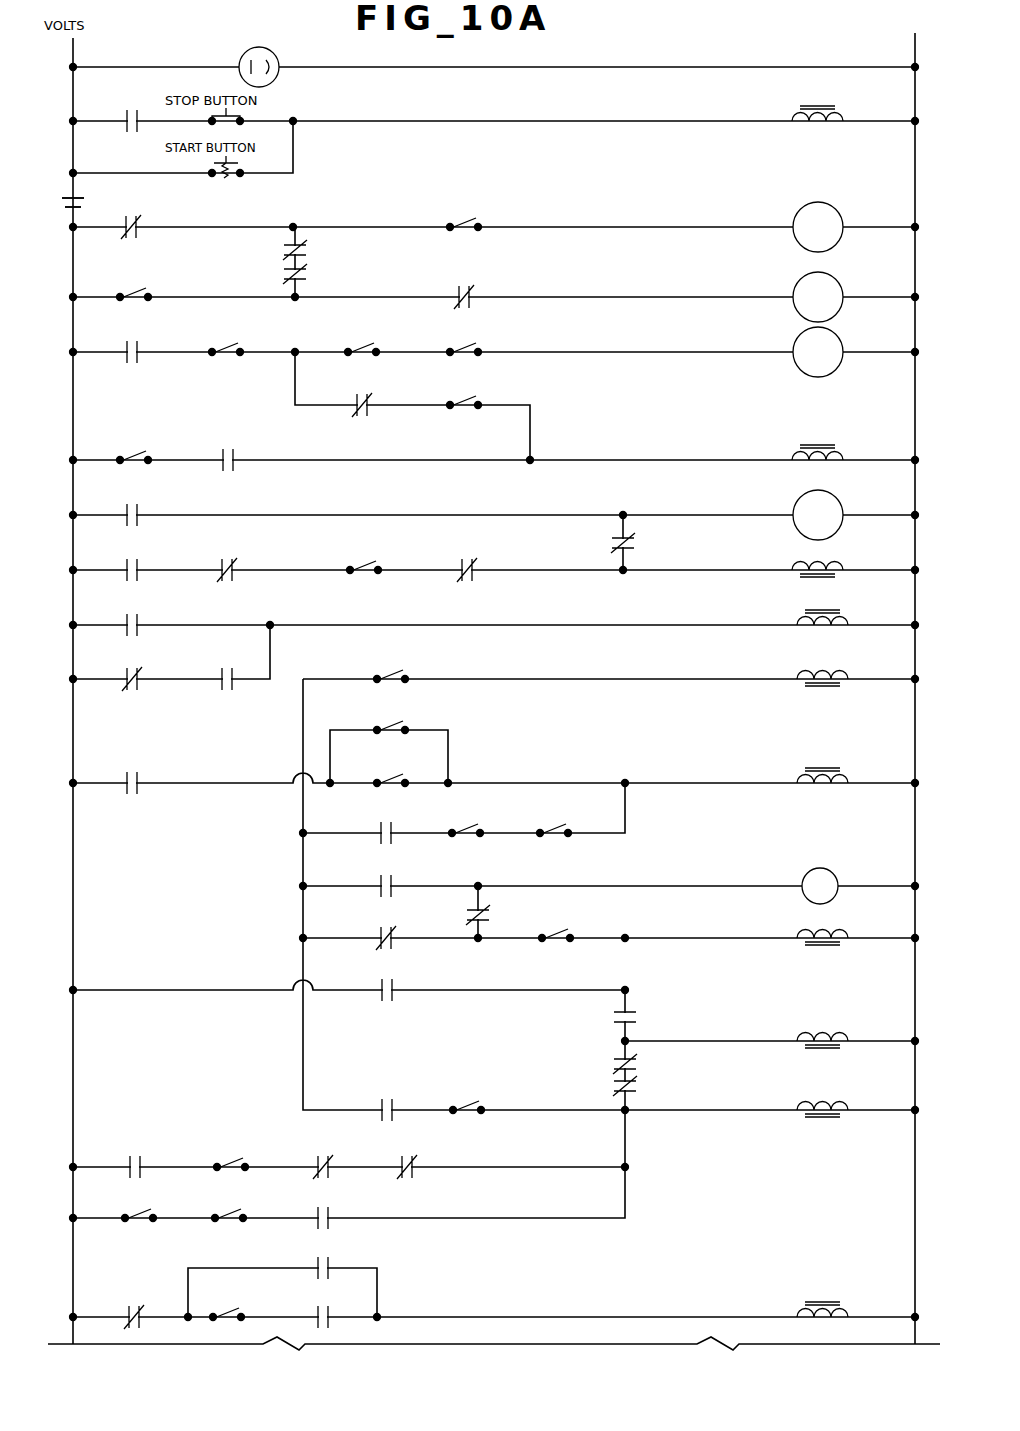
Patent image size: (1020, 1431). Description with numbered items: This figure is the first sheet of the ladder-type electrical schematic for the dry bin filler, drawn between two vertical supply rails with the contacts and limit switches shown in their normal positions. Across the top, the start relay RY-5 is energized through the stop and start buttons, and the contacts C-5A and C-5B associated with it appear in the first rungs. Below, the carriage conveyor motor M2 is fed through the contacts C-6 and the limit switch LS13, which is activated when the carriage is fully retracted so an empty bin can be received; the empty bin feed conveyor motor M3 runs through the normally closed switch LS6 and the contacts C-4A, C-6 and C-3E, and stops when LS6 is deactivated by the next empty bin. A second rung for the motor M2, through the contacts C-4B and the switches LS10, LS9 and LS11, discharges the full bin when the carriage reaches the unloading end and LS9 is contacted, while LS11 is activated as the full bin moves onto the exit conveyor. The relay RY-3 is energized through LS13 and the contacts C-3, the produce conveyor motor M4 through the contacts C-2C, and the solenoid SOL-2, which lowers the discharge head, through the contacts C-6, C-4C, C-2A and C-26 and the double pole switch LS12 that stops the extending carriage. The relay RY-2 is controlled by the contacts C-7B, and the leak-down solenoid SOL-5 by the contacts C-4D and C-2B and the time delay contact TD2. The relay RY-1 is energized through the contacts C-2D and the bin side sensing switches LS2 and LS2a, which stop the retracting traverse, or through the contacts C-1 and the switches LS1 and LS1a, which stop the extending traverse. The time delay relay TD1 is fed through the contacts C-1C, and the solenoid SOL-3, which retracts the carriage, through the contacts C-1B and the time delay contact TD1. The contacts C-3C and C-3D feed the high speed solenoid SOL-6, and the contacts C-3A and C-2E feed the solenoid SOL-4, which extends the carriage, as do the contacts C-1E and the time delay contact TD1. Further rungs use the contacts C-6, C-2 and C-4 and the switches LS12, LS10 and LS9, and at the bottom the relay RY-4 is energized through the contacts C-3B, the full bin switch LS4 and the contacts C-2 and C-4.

The relay contacts C-5A is at (122, 112).
The start relay RY-5 is at (791, 119).
The relay contacts C-5B is at (80, 192).
The relay contacts C-6 is at (136, 1162).
The limit switch LS13 is at (148, 440).
The carriage motor M2 is at (805, 237).
The relay contacts C-3E is at (305, 272).
The limit switch LS6 is at (148, 280).
The relay contacts C-4A is at (470, 290).
The feed conveyor motor M3 is at (805, 307).
The relay contacts C-4B is at (150, 335).
The limit switch LS10 is at (153, 1200).
The limit switch LS9 is at (243, 1200).
The limit switch LS11 is at (478, 388).
The relay contacts C-3 is at (234, 453).
The relay RY-3 is at (791, 458).
The relay contacts C-2C is at (138, 508).
The conveyor motor M4 is at (805, 525).
The relay contacts C-4C is at (222, 562).
The limit switch LS12 is at (245, 1150).
The relay contacts C-2A is at (462, 562).
The relay contacts C-26 is at (633, 545).
The hydraulic solenoid SOL-2 is at (792, 568).
The relay contacts C-7B is at (138, 618).
The relay RY-2 is at (796, 624).
The relay contacts C-4D is at (138, 672).
The relay contacts C-2B is at (222, 688).
The time delay relay contact TD2 is at (397, 672).
The leak-down hydraulic solenoid SOL-5 is at (797, 676).
The limit switch LS2a is at (397, 723).
The limit switch LS2 is at (397, 776).
The relay contacts C-2D is at (138, 776).
The relay RY-1 is at (796, 782).
The relay contacts C-1 is at (381, 829).
The limit switch LS1 is at (480, 816).
The limit switch LS1a is at (568, 816).
The time delay relay TD1 is at (481, 1093).
The relay contacts C-1C is at (502, 911).
The relay contacts C-1B is at (381, 934).
The hydraulic solenoid SOL-3 is at (797, 935).
The relay contacts C-3C is at (381, 987).
The relay contacts C-3D is at (630, 1010).
The hydraulic solenoid SOL-6 is at (797, 1038).
The relay contacts C-3A is at (635, 1066).
The relay contacts C-2E is at (635, 1088).
The hydraulic solenoid SOL-4 is at (797, 1107).
The relay contacts C-1E is at (379, 1106).
The relay contacts C-2 is at (338, 1300).
The relay contacts C-4 is at (338, 1252).
The relay contacts C-3B is at (130, 1312).
The limit switch LS4 is at (241, 1300).
The relay RY-4 is at (796, 1316).